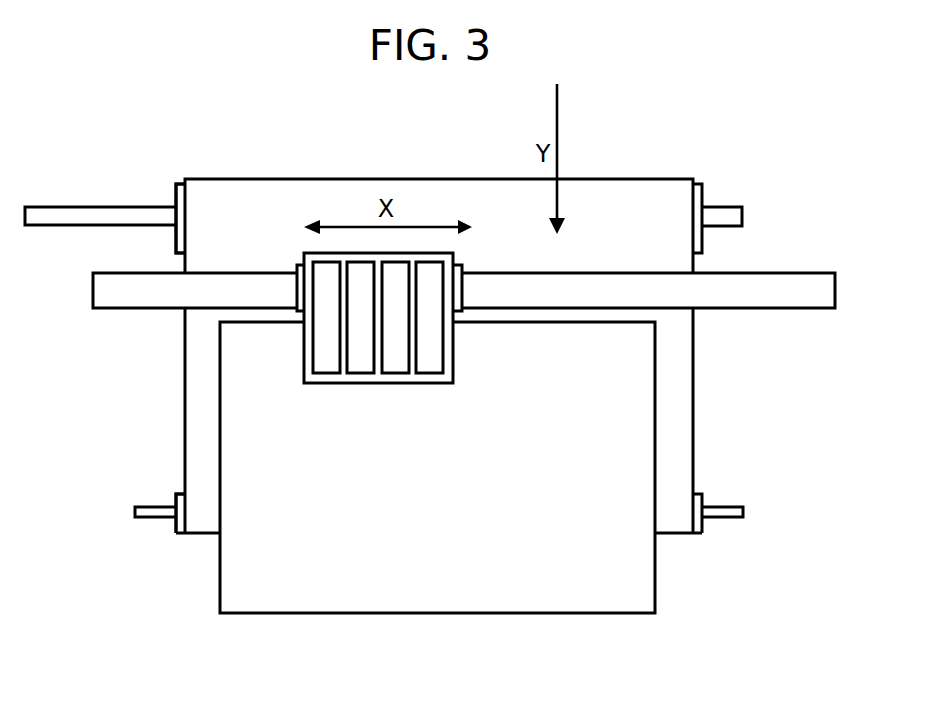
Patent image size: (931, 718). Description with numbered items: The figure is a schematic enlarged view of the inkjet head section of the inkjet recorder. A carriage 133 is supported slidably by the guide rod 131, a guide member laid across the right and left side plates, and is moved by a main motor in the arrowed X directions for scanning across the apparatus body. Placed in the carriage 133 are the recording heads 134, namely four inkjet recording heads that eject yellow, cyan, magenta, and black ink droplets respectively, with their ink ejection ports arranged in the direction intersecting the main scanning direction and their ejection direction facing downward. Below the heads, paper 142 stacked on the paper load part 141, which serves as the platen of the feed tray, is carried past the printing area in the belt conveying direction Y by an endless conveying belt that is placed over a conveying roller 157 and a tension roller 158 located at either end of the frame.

The guide shaft 131 is at (765, 278).
The carriage 133 is at (310, 384).
The recording heads 134 is at (327, 362).
The frame 141 is at (242, 185).
The platen 142 is at (617, 608).
The bearing 157 is at (182, 190).
The bearing 158 is at (181, 534).